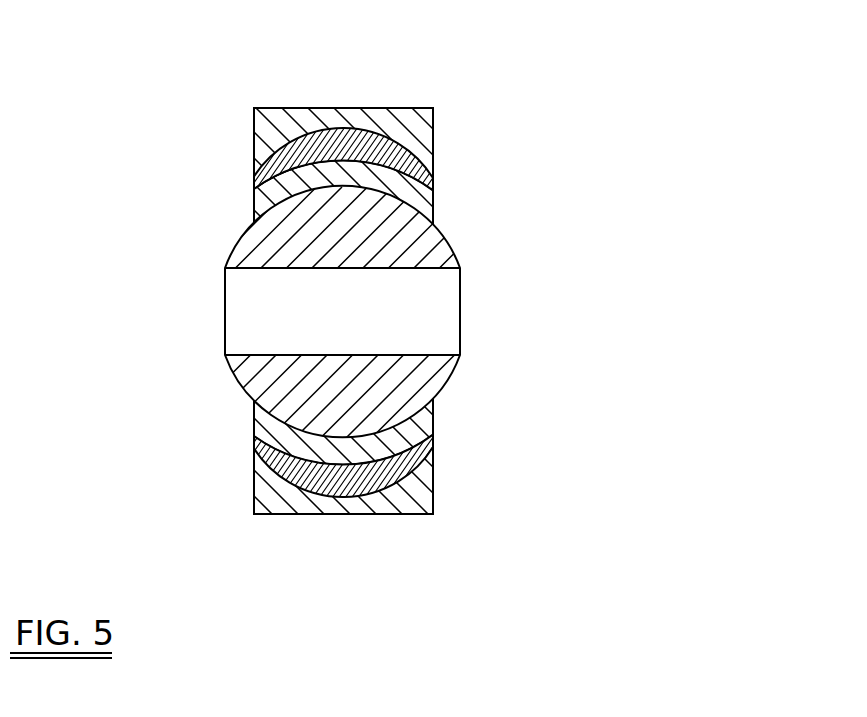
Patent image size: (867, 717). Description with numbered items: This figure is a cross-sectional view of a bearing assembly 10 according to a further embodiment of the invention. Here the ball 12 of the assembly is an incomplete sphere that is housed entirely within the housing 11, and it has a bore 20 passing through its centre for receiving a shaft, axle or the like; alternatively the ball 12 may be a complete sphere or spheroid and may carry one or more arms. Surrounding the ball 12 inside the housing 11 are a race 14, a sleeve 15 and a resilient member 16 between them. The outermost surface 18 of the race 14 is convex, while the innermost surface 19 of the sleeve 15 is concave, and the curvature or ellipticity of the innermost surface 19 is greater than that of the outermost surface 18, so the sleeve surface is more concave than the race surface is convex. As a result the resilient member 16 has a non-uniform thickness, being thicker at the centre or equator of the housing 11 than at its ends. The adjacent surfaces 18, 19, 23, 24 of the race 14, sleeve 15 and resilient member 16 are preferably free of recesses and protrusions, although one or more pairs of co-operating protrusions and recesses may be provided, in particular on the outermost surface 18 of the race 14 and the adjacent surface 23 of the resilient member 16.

The bearing assembly 10 is at (366, 277).
The housing 11 is at (347, 305).
The ball 12 is at (301, 312).
The race 14 is at (267, 425).
The sleeve 15 is at (272, 490).
The resilient member 16 is at (414, 454).
The outermost surface of the race 18 is at (416, 198).
The innermost surface of the sleeve 19 is at (272, 114).
The bore 20 is at (342, 311).
The surface of the resilient member 23 is at (410, 144).
The surface of the resilient member 24 is at (257, 189).